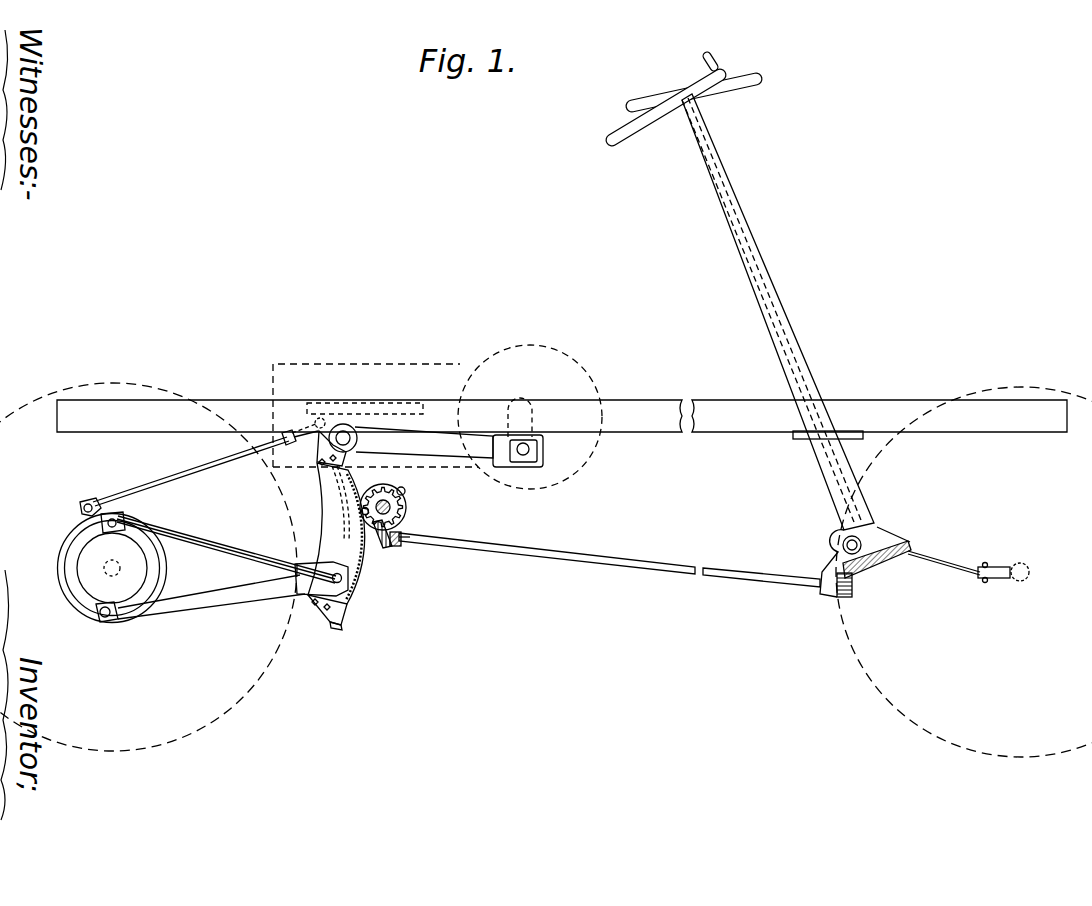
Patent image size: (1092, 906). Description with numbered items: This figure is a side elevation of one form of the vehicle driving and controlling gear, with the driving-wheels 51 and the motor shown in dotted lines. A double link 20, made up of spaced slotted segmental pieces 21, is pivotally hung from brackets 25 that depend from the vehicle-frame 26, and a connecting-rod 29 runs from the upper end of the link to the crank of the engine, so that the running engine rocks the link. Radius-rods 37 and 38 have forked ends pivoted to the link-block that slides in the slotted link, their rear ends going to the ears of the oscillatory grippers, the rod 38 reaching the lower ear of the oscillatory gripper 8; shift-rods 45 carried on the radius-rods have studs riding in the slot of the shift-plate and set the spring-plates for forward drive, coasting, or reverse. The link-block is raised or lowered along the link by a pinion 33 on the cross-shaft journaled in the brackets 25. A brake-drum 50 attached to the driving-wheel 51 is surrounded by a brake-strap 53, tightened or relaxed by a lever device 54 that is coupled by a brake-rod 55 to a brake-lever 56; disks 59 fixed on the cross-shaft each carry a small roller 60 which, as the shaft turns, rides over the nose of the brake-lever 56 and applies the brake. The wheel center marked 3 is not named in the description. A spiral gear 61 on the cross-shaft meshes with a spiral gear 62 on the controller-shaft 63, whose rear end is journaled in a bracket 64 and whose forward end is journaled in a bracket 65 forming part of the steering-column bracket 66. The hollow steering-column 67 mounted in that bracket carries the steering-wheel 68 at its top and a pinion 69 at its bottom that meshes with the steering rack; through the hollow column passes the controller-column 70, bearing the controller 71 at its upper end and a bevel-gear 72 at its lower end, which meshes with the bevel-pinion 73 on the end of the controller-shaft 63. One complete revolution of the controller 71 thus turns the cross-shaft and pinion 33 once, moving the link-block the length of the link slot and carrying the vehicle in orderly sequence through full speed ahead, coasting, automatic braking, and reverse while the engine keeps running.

The axle 3 is at (121, 568).
The oscillatory gripper 8 is at (112, 568).
The double link 20 is at (314, 520).
The slotted segmental pieces 21 is at (516, 345).
The brackets 25 is at (432, 460).
The vehicle-frame 26 is at (562, 416).
The connecting-rod 29 is at (463, 442).
The pinion 33 is at (396, 508).
The radius-rod 37 is at (218, 543).
The radius-rod 38 is at (212, 593).
The shift-rods 45 is at (250, 556).
The brake-drums 50 is at (72, 570).
The driving-wheels 51 is at (257, 688).
The brake-strap 53 is at (78, 526).
The lever device 54 is at (90, 500).
The brake-rods 55 is at (223, 463).
The brake-levers 56 is at (318, 480).
The disks 59 is at (415, 531).
The small roller 60 is at (405, 494).
The spiral gear 61 is at (415, 516).
The spiral gear 62 is at (384, 549).
The controller-shaft 63 is at (582, 554).
The bracket 64 is at (402, 547).
The bracket 65 is at (830, 566).
The steering-column bracket 66 is at (824, 476).
The hollow steering-column 67 is at (756, 256).
The steering-wheel 68 is at (650, 128).
The pinion 69 is at (893, 524).
The controller-column 70 is at (782, 318).
The controller 71 is at (662, 95).
The bevel-gear 72 is at (890, 566).
The bevel-pinion 73 is at (856, 595).